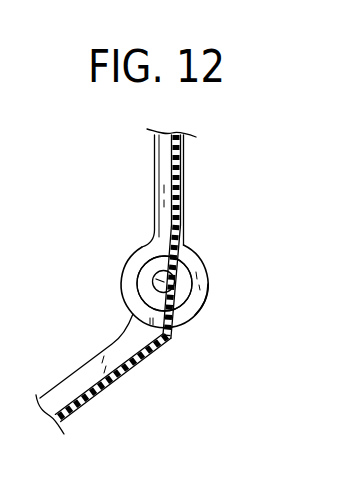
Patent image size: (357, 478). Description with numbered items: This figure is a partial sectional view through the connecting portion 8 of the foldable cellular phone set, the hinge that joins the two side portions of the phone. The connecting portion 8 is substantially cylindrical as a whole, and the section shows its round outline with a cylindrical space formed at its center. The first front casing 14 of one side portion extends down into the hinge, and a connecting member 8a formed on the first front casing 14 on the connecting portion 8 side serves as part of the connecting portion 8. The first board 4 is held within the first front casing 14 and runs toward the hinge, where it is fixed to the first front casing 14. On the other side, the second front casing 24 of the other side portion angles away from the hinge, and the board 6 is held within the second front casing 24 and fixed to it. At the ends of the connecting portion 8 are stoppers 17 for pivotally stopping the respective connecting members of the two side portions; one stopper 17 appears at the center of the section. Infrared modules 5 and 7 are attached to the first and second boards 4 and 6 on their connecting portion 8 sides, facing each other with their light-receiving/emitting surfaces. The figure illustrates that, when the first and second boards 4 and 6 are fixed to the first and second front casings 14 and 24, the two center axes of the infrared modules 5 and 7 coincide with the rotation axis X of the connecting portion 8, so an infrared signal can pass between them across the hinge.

The first front casing 14 is at (163, 173).
The first board 4 is at (182, 175).
The connecting portion 8 is at (216, 272).
The connecting member 8a is at (199, 296).
The infrared module 5 is at (158, 280).
The infrared module 7 is at (164, 283).
The stopper 17 is at (147, 286).
The rotation axis X is at (149, 264).
The second front casing 24 is at (77, 386).
The board 6 is at (117, 376).